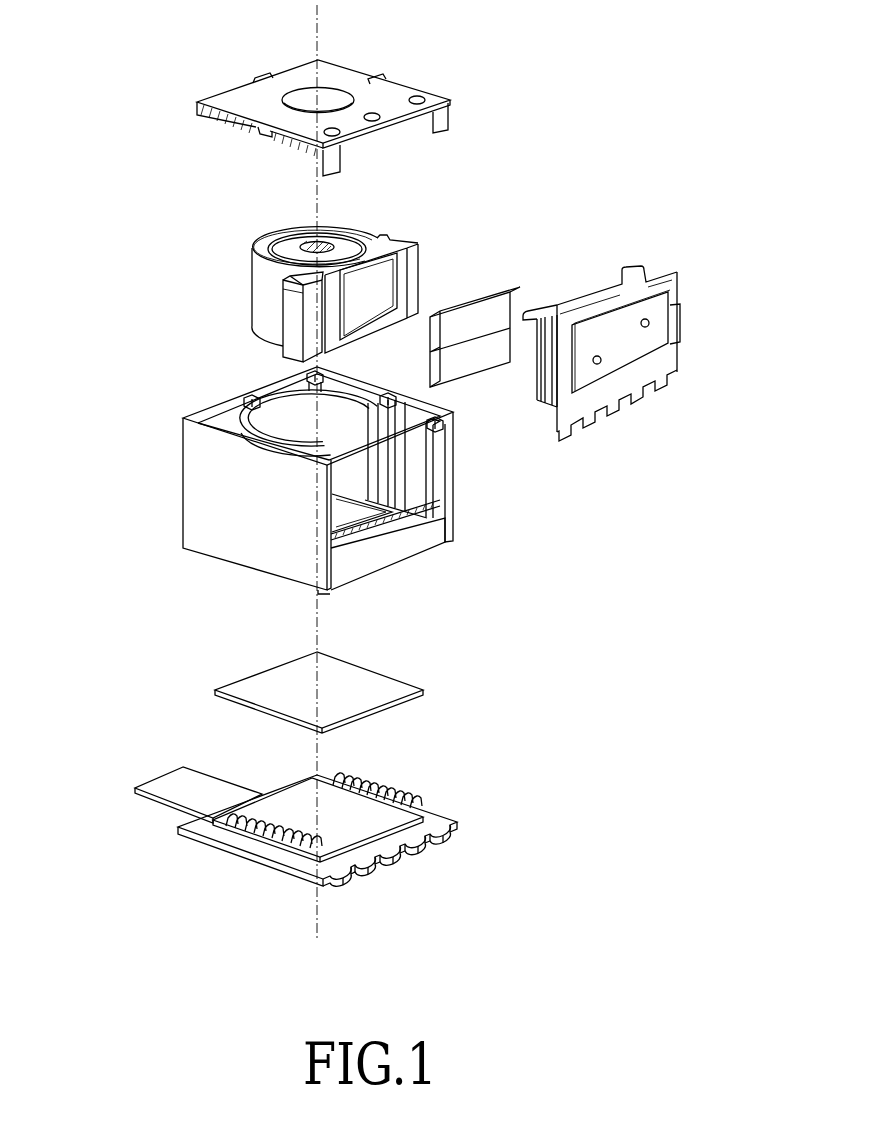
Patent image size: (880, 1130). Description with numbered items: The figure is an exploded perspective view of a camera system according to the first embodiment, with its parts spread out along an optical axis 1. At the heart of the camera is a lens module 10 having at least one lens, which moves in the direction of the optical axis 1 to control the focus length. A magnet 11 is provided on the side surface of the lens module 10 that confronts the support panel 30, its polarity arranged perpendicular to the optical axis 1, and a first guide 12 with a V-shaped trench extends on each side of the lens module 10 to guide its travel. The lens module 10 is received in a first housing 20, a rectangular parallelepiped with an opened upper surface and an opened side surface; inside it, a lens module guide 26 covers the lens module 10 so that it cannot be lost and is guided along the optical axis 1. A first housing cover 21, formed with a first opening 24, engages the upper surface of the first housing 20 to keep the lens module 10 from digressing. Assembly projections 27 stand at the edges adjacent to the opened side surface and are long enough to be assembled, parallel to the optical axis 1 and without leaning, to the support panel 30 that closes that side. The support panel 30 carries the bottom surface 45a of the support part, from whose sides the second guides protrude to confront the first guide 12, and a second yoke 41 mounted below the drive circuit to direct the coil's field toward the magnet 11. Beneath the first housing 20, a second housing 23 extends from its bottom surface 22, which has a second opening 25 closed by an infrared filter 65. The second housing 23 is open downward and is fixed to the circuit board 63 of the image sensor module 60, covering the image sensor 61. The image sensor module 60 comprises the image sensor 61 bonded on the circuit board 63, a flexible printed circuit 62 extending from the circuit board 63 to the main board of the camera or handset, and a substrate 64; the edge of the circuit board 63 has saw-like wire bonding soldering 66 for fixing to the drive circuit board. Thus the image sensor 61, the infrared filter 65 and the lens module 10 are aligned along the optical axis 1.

The optical axis 1 is at (320, 10).
The lens module 10 is at (283, 290).
The magnet 11 is at (503, 303).
The first guide 12 is at (312, 322).
The first housing 20 is at (310, 497).
The first housing cover 21 is at (304, 105).
The bottom surface 22 is at (417, 514).
The second housing 23 is at (410, 552).
The first opening 24 is at (336, 99).
The second opening 25 is at (341, 522).
The lens module guide 26 is at (240, 405).
The assembly projection 27 is at (436, 480).
The support panel 30 is at (649, 345).
The second yoke 41 is at (654, 350).
The bottom surface of support part 45a is at (681, 332).
The image sensor module 60 is at (253, 782).
The image sensor 61 is at (298, 798).
The flexible printed circuit 62 is at (185, 778).
The circuit board 63 is at (262, 810).
The substrate 64 is at (281, 842).
The infrared filter 65 is at (232, 678).
The saw-like wire bonding soldering 66 is at (328, 865).